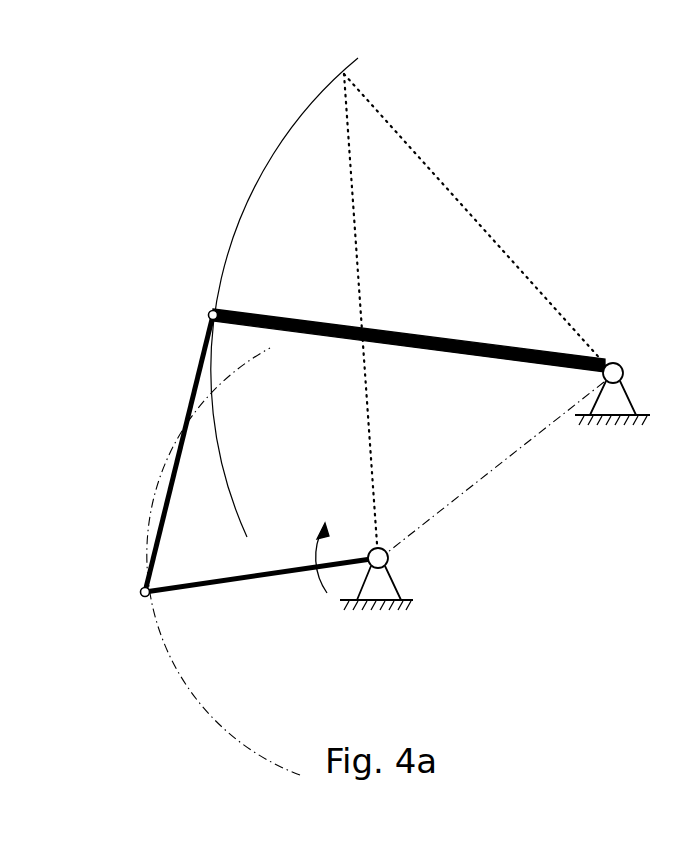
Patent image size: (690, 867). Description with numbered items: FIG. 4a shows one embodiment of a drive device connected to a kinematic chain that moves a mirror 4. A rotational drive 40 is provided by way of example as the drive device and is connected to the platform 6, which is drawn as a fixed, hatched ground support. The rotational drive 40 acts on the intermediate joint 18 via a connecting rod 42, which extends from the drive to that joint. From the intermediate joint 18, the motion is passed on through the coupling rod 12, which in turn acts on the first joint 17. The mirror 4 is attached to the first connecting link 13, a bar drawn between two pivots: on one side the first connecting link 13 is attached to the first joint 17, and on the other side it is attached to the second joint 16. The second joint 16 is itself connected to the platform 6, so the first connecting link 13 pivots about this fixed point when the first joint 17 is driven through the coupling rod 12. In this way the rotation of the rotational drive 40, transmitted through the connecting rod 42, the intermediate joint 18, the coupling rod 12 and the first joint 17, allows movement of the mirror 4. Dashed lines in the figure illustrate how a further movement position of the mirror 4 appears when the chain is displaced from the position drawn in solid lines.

The mirror 4 is at (375, 323).
The platform 6 is at (620, 423).
The coupling rod 12 is at (177, 468).
The first connecting link 13 is at (438, 350).
The second joint 16 is at (612, 362).
The first joint 17 is at (210, 313).
The intermediate joint 18 is at (140, 594).
The rotational drive 40 is at (386, 569).
The connecting rod 42 is at (255, 577).